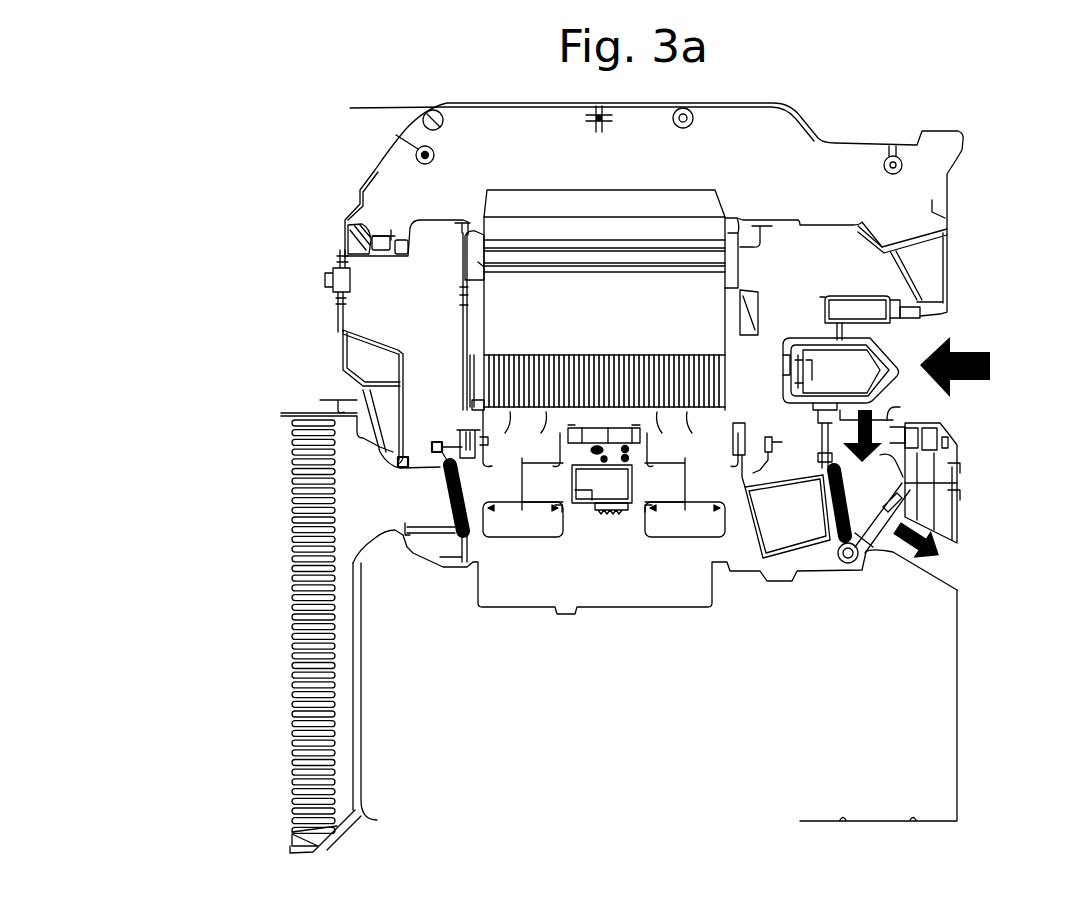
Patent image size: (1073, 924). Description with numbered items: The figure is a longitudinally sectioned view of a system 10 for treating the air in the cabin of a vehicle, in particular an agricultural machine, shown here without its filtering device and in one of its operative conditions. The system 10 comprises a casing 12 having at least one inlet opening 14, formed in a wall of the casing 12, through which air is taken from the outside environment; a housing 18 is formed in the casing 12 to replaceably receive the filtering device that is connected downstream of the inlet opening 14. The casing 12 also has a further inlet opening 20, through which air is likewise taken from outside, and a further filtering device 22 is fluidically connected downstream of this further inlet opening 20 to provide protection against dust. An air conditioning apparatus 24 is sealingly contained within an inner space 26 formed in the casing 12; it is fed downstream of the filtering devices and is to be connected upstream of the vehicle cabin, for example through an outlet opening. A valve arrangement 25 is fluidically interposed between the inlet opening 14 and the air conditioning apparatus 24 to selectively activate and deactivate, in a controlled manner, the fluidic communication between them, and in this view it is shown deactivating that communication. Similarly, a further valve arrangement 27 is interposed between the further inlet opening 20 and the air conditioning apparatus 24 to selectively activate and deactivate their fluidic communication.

The system for treating the air 10 is at (312, 124).
The casing 12 is at (652, 828).
The inlet opening 14 is at (972, 735).
The housing 18 is at (957, 158).
The further inlet opening 20 is at (287, 847).
The further filtering device 22 is at (282, 754).
The air conditioning apparatus 24 is at (725, 203).
The valve arrangement 25 is at (856, 496).
The inner space 26 is at (826, 228).
The further valve arrangement 27 is at (436, 500).